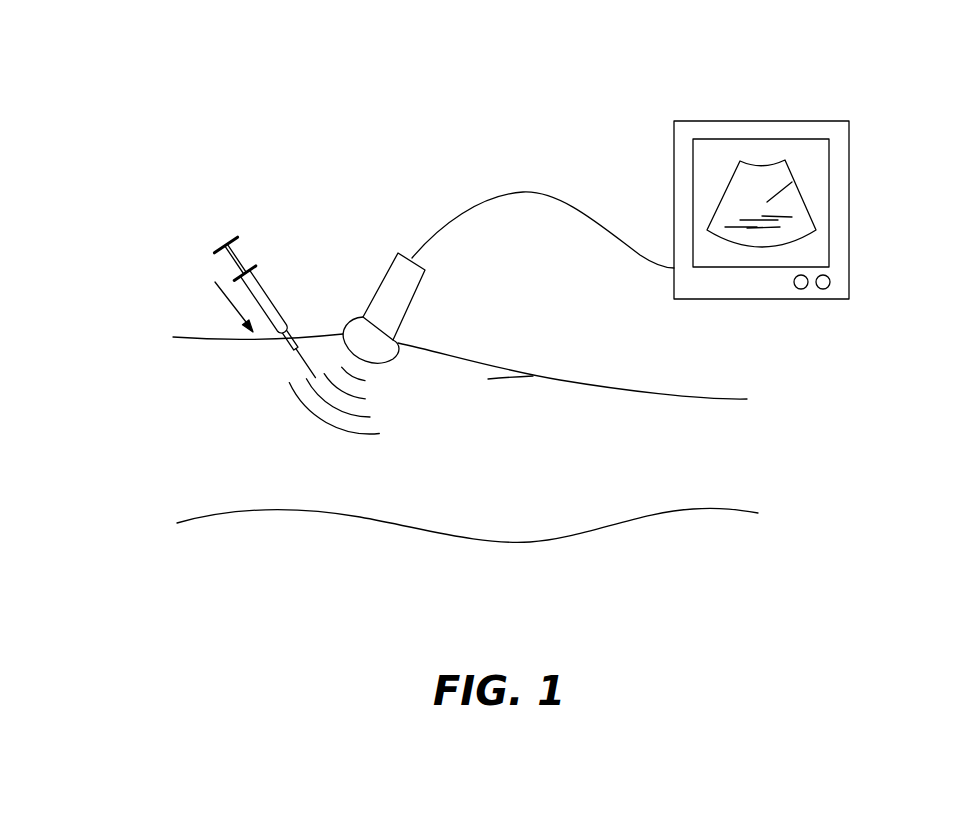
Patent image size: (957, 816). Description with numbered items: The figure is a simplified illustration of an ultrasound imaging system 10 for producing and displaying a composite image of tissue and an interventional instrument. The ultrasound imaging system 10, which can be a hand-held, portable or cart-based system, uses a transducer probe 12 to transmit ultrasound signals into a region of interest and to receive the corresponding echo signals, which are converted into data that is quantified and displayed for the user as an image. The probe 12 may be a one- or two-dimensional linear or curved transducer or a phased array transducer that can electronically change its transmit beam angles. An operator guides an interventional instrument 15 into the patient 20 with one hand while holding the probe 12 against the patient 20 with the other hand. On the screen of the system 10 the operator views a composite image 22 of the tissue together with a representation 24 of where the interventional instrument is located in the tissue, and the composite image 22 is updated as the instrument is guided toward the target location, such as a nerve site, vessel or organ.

The ultrasound imaging system 10 is at (797, 121).
The transducer probe 12 is at (413, 297).
The interventional instrument 15 is at (274, 296).
The patient 20 is at (630, 557).
The composite image 22 is at (798, 160).
The representation of the interventional instrument 24 is at (776, 198).